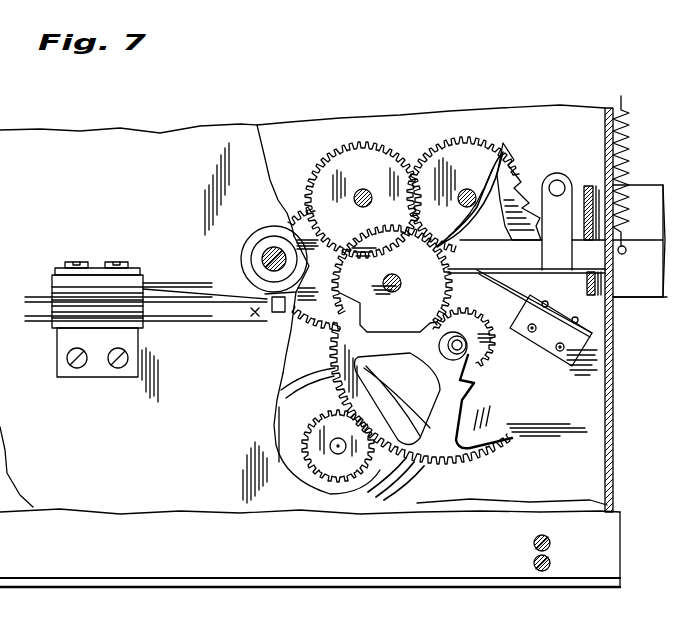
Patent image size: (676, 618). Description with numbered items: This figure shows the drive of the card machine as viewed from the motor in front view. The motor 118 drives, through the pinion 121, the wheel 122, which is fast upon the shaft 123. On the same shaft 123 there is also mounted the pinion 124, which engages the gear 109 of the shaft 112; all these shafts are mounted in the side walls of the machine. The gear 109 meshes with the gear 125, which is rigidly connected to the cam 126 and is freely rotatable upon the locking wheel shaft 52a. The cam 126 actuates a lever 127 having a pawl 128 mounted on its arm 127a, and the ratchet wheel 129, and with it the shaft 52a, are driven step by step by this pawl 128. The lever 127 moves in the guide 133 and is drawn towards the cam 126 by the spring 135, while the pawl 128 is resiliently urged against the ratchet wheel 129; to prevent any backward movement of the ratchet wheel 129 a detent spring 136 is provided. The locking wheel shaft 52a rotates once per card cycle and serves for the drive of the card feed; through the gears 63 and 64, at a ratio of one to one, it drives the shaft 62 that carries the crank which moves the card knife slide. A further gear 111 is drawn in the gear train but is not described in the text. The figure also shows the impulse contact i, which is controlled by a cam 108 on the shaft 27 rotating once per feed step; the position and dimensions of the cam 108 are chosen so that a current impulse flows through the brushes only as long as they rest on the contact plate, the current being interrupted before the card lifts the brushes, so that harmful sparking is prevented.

The shaft 27 is at (272, 250).
The cam 108 is at (250, 262).
The impulse contact i is at (257, 315).
The gear wheel 111 is at (297, 227).
The gear 63 is at (322, 177).
The shaft 62 is at (361, 190).
The gear 125 is at (420, 160).
The gear 64 is at (462, 165).
The locking wheel shaft 52a is at (460, 194).
The cam 126 is at (485, 167).
The pawl 128 is at (537, 182).
The ratchet wheel 129 is at (512, 190).
The arm 127a is at (559, 217).
The guide 133 is at (587, 186).
The spring 135 is at (628, 140).
The lever 127 is at (613, 298).
The detent spring 136 is at (513, 297).
The shaft 112 is at (384, 285).
The gear 109 is at (430, 294).
The pinion 124 is at (482, 357).
The shaft 123 is at (458, 352).
The wheel 122 is at (418, 450).
The motor 118 is at (293, 435).
The pinion 121 is at (327, 460).